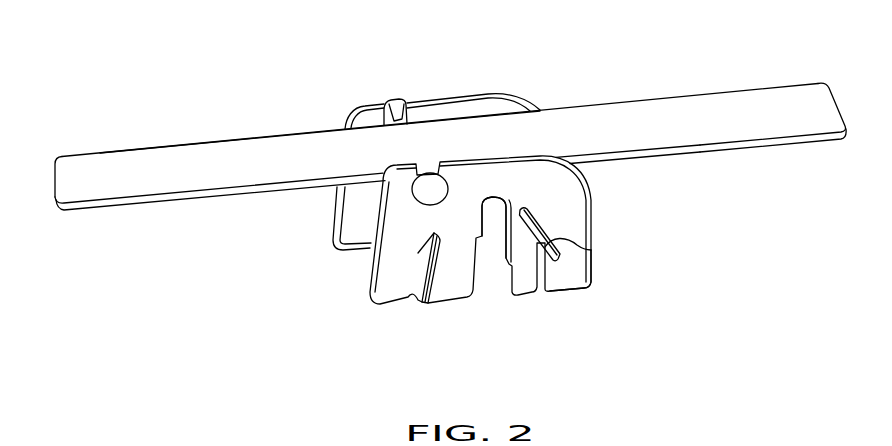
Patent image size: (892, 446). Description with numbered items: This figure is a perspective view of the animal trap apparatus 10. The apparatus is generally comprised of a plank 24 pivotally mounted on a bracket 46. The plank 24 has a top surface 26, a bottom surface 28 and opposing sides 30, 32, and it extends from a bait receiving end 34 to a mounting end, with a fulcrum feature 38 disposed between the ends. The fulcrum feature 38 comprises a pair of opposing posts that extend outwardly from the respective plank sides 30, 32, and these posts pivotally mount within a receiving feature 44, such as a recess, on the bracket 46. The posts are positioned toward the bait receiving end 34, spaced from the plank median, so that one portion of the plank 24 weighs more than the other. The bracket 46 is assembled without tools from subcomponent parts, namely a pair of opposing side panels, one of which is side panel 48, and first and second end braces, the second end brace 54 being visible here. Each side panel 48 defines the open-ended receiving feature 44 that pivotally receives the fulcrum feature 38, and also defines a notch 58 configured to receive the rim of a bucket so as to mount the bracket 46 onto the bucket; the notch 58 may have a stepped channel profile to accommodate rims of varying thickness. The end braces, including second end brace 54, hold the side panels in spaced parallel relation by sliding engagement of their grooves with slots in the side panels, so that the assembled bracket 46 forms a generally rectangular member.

The animal trap apparatus 10 is at (435, 180).
The plank 24 is at (643, 99).
The top surface 26 is at (768, 95).
The bottom surface 28 is at (672, 157).
The side 30 is at (222, 196).
The side 32 is at (245, 136).
The bait receiving end 34 is at (53, 175).
The fulcrum feature 38 is at (400, 108).
The receiving feature 44 is at (388, 106).
The bracket 46 is at (360, 282).
The side panel 48 is at (590, 280).
The second end brace 54 is at (591, 250).
The notch 58 is at (507, 283).